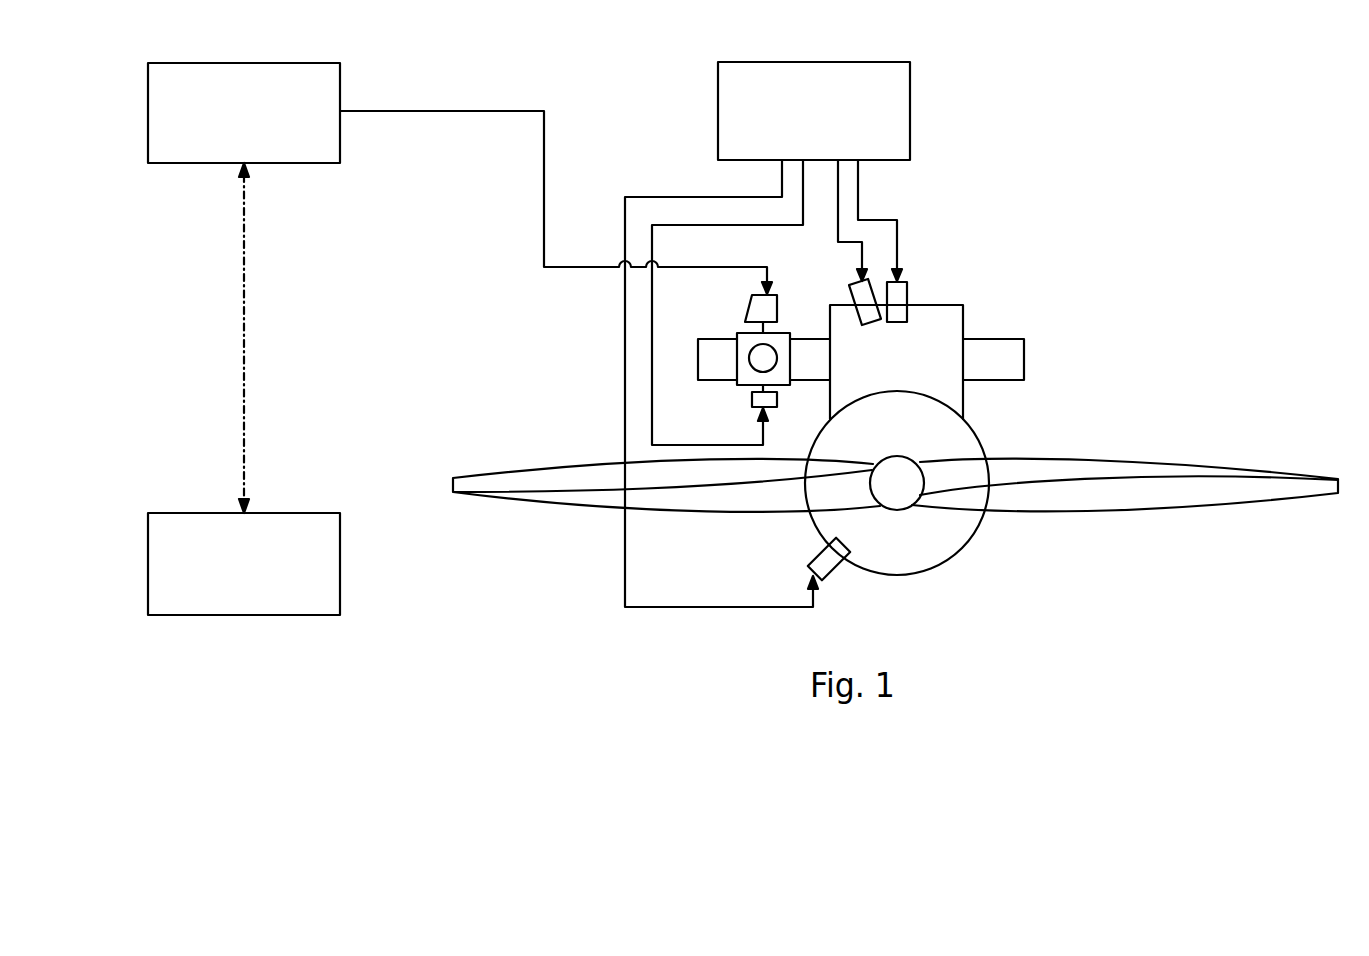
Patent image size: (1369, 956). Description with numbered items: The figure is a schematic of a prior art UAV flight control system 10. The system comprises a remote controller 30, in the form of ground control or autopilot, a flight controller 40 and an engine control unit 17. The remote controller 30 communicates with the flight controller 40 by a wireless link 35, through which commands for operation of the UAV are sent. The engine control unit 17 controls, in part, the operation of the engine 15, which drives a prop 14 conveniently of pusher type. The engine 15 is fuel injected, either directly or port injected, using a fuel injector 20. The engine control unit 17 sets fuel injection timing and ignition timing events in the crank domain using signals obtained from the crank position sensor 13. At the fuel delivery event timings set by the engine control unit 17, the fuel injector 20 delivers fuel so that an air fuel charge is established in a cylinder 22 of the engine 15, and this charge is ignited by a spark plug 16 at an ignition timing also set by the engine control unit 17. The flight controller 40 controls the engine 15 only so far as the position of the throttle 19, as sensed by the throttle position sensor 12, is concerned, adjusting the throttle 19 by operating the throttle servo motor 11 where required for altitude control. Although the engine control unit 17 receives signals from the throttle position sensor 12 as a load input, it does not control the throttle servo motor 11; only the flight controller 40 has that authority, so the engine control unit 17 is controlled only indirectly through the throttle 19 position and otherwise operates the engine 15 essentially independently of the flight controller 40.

The UAV flight control system 10 is at (949, 366).
The throttle servo motor 11 is at (748, 300).
The throttle position sensor 12 is at (752, 397).
The crank position sensor 13 is at (838, 574).
The prop 14 is at (1222, 488).
The engine 15 is at (968, 540).
The spark plug 16 is at (907, 292).
The engine control unit 17 is at (718, 126).
The throttle 19 is at (790, 386).
The fuel injector 20 is at (852, 292).
The cylinder 22 is at (963, 393).
The remote controller 30 is at (340, 566).
The wireless link 35 is at (244, 277).
The flight controller 40 is at (305, 163).